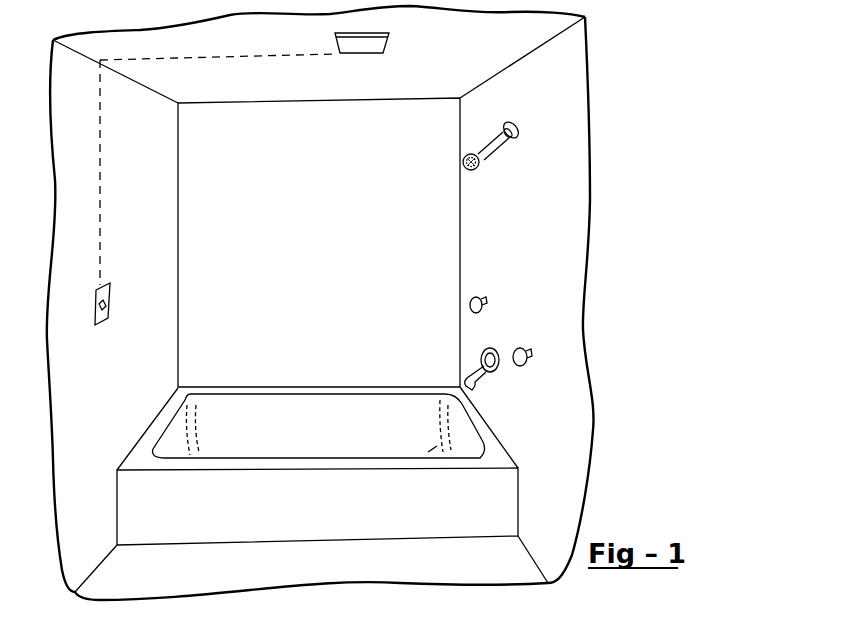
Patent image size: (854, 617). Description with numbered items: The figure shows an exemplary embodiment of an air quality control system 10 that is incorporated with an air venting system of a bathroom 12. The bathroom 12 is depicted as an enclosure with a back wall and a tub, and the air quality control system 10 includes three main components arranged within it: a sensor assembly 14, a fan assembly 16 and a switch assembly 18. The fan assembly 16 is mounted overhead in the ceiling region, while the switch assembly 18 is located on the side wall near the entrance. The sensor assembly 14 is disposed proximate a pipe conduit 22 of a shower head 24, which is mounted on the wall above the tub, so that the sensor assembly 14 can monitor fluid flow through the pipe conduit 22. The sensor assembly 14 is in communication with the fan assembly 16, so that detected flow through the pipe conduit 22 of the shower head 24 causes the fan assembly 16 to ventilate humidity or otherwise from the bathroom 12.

The air quality control system 10 is at (554, 110).
The bathroom 12 is at (346, 230).
The sensor assembly 14 is at (488, 125).
The fan assembly 16 is at (338, 62).
The switch assembly 18 is at (123, 280).
The pipe conduit 22 is at (488, 150).
The shower head 24 is at (473, 172).